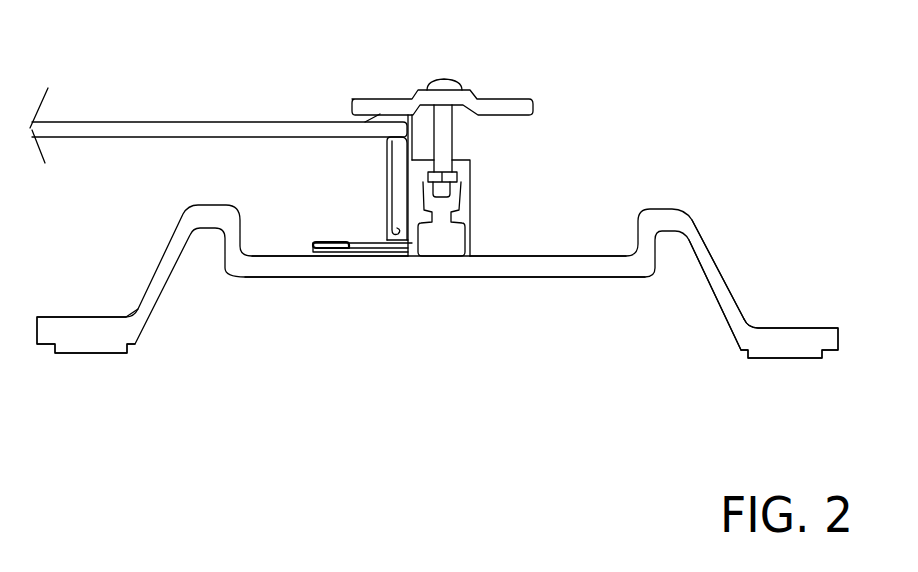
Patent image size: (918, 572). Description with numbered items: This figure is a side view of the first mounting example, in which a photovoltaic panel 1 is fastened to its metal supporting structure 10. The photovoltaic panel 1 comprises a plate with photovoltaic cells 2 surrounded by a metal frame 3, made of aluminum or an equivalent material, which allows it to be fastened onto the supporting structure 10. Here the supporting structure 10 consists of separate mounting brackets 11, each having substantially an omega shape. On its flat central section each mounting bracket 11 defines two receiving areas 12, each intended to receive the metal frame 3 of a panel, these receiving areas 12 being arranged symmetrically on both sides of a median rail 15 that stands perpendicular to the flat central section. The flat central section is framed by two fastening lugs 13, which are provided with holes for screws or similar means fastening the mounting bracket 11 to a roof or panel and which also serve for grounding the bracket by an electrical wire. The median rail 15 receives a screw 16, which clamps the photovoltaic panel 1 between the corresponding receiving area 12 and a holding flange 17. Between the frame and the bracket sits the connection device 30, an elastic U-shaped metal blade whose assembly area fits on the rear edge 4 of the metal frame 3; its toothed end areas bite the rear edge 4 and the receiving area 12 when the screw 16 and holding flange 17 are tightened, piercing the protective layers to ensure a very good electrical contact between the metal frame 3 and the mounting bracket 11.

The photovoltaic panel 1 is at (87, 78).
The plate with photovoltaic cells 2 is at (152, 121).
The metal frame 3 is at (384, 197).
The rear edge 4 is at (375, 253).
The metal supporting structure 10 is at (684, 195).
The mounting bracket 11 is at (709, 253).
The receiving area 12 is at (285, 256).
The fastening lug 13 is at (85, 328).
The median rail 15 is at (461, 196).
The screw 16 is at (451, 86).
The holding flange 17 is at (397, 108).
The connection device 30 is at (310, 262).